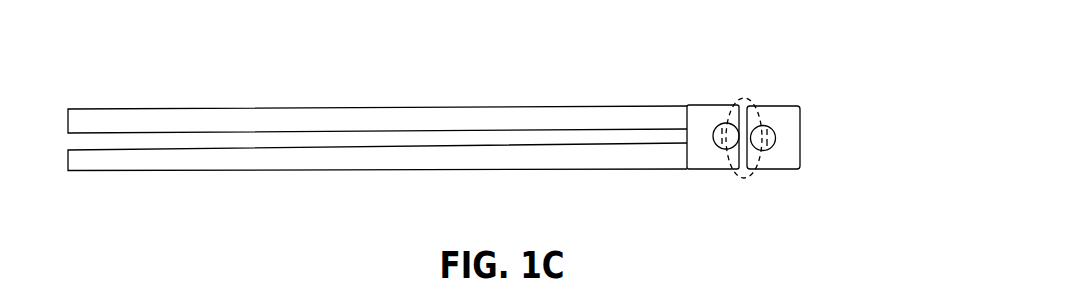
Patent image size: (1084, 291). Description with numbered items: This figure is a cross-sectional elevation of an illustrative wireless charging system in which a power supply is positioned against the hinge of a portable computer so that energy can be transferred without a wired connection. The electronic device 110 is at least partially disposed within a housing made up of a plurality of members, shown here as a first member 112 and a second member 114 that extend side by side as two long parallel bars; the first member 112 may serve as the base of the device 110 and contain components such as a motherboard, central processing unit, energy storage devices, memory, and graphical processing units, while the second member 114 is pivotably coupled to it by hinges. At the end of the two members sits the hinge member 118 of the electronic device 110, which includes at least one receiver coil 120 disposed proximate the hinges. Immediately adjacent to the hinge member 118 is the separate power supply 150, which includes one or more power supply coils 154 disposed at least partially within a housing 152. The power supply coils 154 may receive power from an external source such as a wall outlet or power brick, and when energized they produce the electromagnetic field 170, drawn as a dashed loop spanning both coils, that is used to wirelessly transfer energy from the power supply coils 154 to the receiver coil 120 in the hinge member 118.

The electronic device 110 is at (481, 101).
The first member 112 is at (292, 158).
The second member 114 is at (310, 118).
The hinge member 118 is at (709, 170).
The receiver coil 120 is at (713, 129).
The power supply 150 is at (774, 179).
The housing 152 is at (801, 163).
The power supply coil 154 is at (777, 137).
The electromagnetic field 170 is at (742, 98).